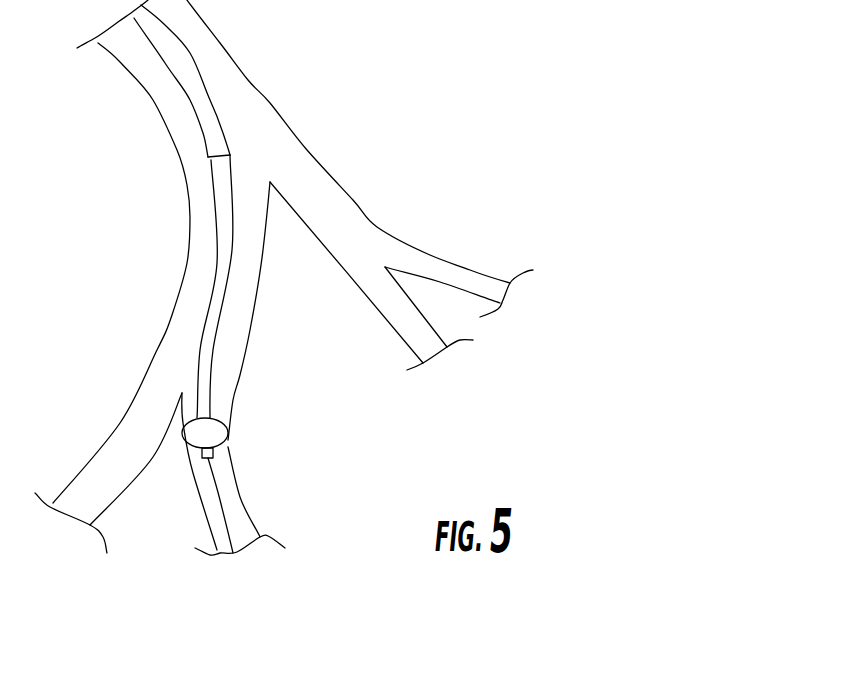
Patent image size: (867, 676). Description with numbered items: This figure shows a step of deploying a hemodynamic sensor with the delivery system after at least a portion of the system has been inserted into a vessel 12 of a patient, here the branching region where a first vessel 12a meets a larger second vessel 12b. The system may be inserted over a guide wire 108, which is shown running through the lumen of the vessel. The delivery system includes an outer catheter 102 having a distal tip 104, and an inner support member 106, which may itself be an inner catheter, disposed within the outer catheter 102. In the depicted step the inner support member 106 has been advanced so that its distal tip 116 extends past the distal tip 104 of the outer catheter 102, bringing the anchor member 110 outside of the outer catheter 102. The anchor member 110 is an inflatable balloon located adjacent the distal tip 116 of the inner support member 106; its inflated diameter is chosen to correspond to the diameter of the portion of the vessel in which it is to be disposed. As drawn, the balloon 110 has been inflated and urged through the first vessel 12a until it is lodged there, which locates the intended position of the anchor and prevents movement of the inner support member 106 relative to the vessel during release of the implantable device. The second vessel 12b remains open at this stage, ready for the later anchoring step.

The vessel 12 is at (190, 157).
The first vessel 12a is at (247, 519).
The second vessel 12b is at (193, 221).
The outer catheter 102 is at (167, 63).
The distal tip of outer catheter 104 is at (222, 148).
The inner support member 106 is at (215, 263).
The guide wire 108 is at (217, 497).
The anchor member 110 is at (182, 438).
The distal tip of inner support member 116 is at (218, 449).